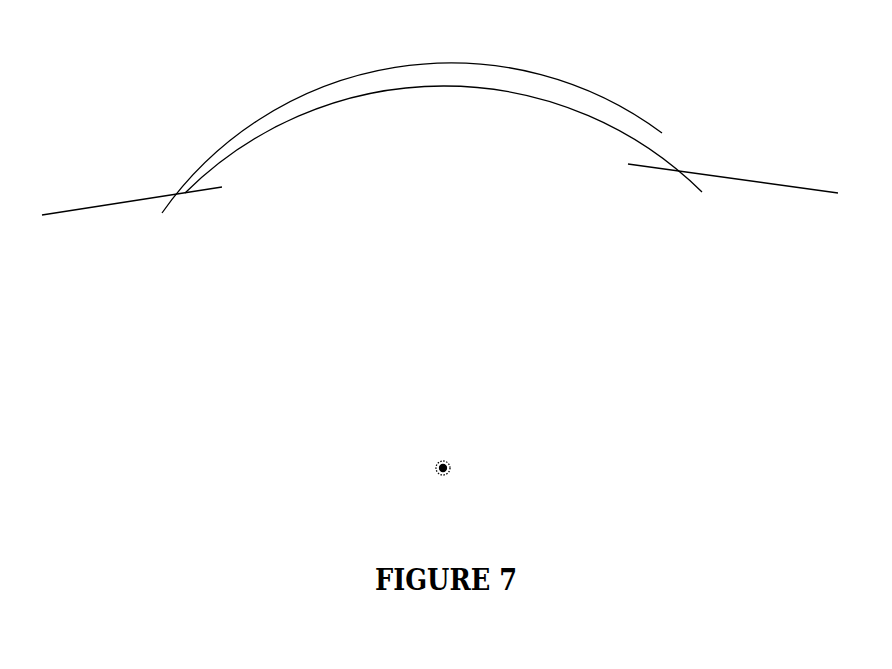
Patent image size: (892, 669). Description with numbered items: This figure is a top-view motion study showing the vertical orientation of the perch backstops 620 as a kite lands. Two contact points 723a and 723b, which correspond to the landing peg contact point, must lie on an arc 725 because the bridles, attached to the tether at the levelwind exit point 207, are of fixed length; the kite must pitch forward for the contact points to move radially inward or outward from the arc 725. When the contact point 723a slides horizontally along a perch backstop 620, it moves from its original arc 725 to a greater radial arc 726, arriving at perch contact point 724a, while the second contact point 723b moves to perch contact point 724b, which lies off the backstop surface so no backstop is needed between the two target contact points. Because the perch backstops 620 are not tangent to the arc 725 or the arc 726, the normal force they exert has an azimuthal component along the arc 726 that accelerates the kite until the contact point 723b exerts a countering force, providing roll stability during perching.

The perch backstop 620 is at (77, 208).
The greater radial arc 726 is at (565, 88).
The arc 725 is at (532, 97).
The perch contact point 724a is at (150, 198).
The perch contact point 724b is at (663, 133).
The contact point 723a is at (183, 193).
The contact point 723b is at (678, 171).
The levelwind exit point 207 is at (442, 457).